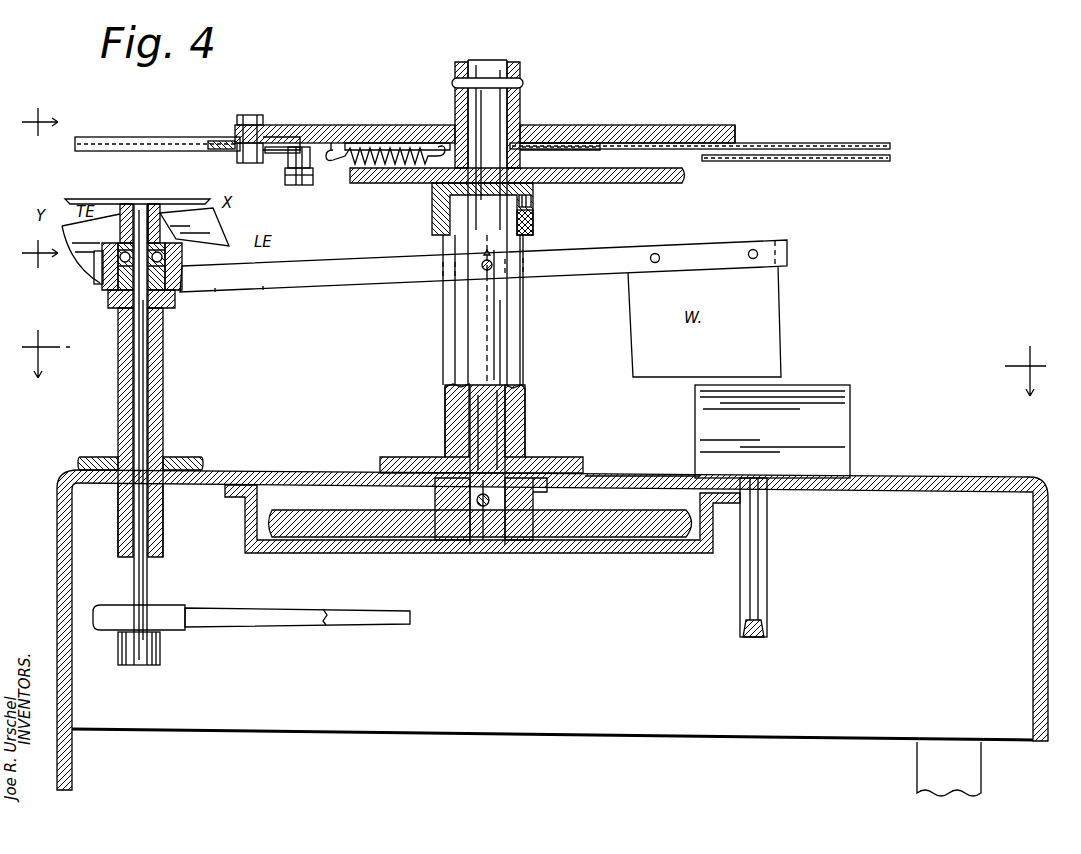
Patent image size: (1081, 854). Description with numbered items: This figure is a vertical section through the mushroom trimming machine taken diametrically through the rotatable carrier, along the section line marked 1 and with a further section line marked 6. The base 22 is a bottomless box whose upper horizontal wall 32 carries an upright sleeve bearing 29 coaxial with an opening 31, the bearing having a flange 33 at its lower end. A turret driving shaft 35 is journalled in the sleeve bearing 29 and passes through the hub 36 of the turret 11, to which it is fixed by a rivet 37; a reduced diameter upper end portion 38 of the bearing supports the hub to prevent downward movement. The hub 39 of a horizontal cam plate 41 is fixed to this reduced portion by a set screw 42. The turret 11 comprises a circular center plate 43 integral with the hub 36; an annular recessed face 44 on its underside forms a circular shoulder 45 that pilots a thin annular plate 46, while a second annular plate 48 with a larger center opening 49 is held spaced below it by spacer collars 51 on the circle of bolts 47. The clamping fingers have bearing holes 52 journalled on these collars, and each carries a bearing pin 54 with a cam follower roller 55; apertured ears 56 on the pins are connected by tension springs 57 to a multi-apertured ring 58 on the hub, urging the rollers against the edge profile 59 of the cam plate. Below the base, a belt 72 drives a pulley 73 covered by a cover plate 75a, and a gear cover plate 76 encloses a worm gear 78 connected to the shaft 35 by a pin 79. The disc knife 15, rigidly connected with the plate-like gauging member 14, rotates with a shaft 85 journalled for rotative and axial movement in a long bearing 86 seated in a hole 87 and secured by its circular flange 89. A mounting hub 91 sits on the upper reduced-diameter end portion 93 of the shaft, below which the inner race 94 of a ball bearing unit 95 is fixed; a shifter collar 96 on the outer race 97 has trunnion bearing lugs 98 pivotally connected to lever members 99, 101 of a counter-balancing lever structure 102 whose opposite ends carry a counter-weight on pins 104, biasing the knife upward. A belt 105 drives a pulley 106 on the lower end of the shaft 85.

The section line 1- 1 is at (533, 363).
The section line 6- 6 is at (32, 188).
The rotatable carrier or turret 11 is at (691, 121).
The plate-like gauging member 14 is at (216, 229).
The disc knife 15 is at (75, 200).
The base 22 is at (959, 478).
The upright sleeve bearing 29 is at (513, 410).
The opening 31 is at (540, 487).
The upper horizontal wall 32 is at (622, 478).
The flange 33 is at (578, 458).
The turret driving shaft 35 is at (475, 425).
The hub 36 is at (521, 101).
The rivet 37 is at (521, 85).
The reduced diameter upper end portion 38 is at (445, 222).
The hub 39 is at (531, 226).
The horizontal cam plate 41 is at (628, 183).
The set screw 42 is at (532, 201).
The circular center plate 43 is at (362, 130).
The annular recessed face 44 is at (626, 126).
The circular shoulder 45 is at (542, 150).
The thin annular plate 46 is at (118, 137).
The bolts 47 is at (250, 118).
The second annular plate 48 is at (108, 151).
The center opening 49 is at (272, 153).
The spacer collars 51 is at (266, 140).
The bearing holes 52 is at (232, 150).
The bearing pin 54 is at (298, 185).
The cam follower roller 55 is at (313, 175).
The apertured ears 56 is at (331, 142).
The springs 57 is at (380, 162).
The multi-apertured ring 58 is at (445, 130).
The edge profile 59 is at (690, 185).
The belt 72 is at (750, 637).
The pulley 73 is at (768, 590).
The cover plate 75a is at (848, 433).
The gear cover plate 76 is at (596, 553).
The worm gear 78 is at (395, 538).
The pin 79 is at (483, 545).
The shaft 85 is at (145, 400).
The long bearing 86 is at (162, 362).
The hole 87 is at (172, 485).
The circular flange 89 is at (200, 458).
The mounting hub 91 is at (145, 200).
The upper reduced-diameter end portion 93 is at (160, 225).
The inner race 94 is at (165, 235).
The ball bearing unit 95 is at (181, 258).
The shifter collar 96 is at (100, 284).
The outer race 97 is at (125, 272).
The trunnion bearing lugs 98 is at (108, 304).
The lever member 99 is at (215, 290).
The lever member 101 is at (263, 288).
The counter-balancing lever structure 102 is at (371, 294).
The pins 104 is at (658, 252).
The belt 105 is at (303, 609).
The pulley 106 is at (180, 606).